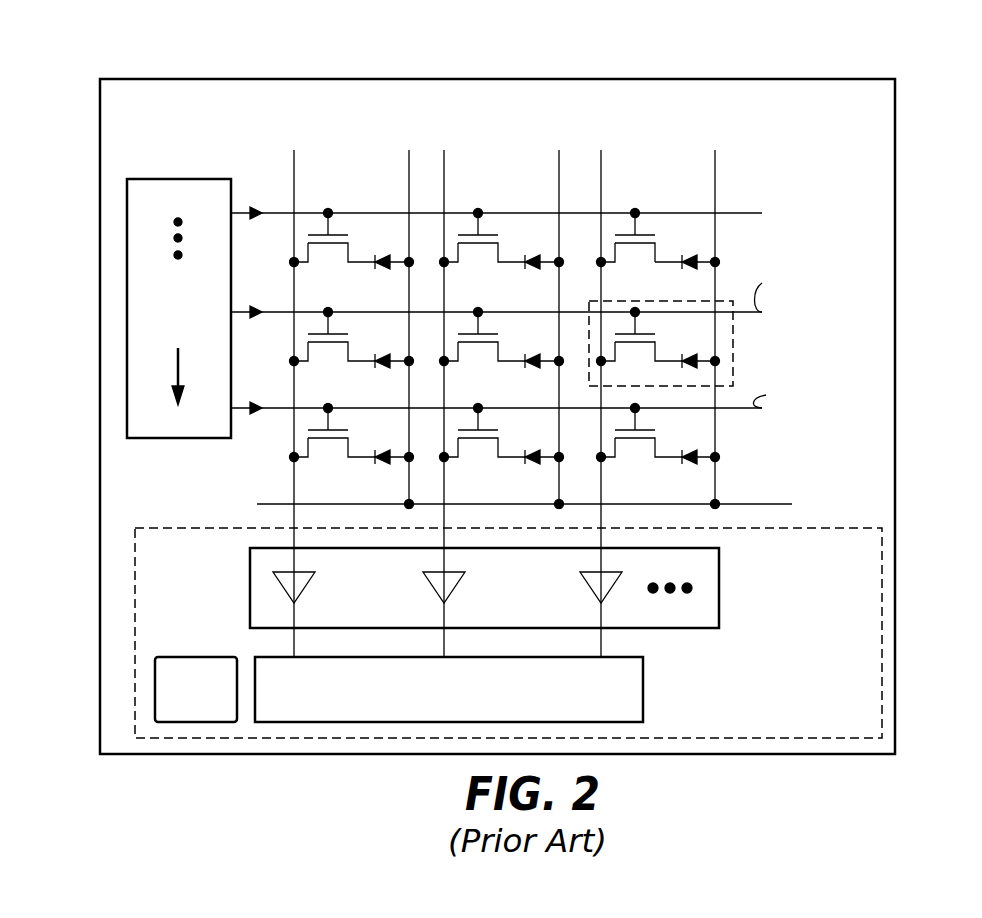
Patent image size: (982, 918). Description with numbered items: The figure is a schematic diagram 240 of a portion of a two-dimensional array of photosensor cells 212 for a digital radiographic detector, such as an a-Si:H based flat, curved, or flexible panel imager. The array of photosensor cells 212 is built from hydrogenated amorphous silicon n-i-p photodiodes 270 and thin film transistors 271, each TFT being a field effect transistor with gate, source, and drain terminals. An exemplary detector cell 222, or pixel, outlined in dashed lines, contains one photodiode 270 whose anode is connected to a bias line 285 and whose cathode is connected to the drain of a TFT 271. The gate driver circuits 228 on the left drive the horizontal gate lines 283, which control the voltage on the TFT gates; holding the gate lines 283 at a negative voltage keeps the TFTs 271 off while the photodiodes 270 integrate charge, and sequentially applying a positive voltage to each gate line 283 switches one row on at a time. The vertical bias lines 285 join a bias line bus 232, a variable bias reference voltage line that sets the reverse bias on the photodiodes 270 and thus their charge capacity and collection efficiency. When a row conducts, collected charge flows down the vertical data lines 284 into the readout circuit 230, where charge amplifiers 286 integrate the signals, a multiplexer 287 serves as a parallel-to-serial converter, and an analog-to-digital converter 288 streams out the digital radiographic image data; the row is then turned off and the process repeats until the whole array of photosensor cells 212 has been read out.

The schematic diagram 240 is at (898, 74).
The array of photosensor cells 212 is at (752, 145).
The gate driver circuits 228 is at (168, 179).
The bias lines 285 is at (393, 104).
The data lines 284 is at (458, 104).
The gate lines 283 is at (762, 213).
The thin film transistor 271 is at (645, 236).
The photodiode 270 is at (691, 260).
The detector cell 222 is at (735, 360).
The bias line bus 232 is at (750, 504).
The readout circuit 230 is at (883, 648).
The charge amplifiers 286 is at (719, 588).
The analog-to-digital converter 288 is at (196, 657).
The multiplexer 287 is at (645, 690).